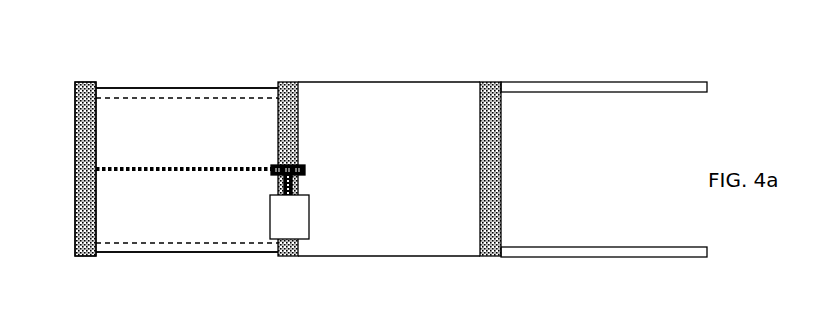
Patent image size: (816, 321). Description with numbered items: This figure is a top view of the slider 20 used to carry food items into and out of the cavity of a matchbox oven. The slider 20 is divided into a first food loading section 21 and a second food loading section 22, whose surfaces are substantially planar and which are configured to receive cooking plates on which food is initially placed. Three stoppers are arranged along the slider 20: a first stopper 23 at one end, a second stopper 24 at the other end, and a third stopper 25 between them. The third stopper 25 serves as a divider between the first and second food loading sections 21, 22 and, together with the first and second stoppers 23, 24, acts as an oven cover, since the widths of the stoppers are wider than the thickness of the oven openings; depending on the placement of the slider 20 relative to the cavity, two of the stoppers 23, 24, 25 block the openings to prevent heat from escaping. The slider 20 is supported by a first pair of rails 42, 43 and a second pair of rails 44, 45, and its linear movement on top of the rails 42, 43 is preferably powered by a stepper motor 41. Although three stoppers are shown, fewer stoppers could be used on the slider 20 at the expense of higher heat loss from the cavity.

The slider 20 is at (75, 257).
The first food loading section 21 is at (209, 131).
The second food loading section 22 is at (402, 136).
The first stopper 23 is at (75, 137).
The second stopper 24 is at (502, 137).
The third stopper 25 is at (290, 82).
The stepper motor 41 is at (300, 233).
The rail of first pair of rails 42 is at (647, 93).
The rail of first pair of rails 43 is at (657, 245).
The rail of second pair of rails 44 is at (163, 88).
The rail of second pair of rails 45 is at (220, 253).